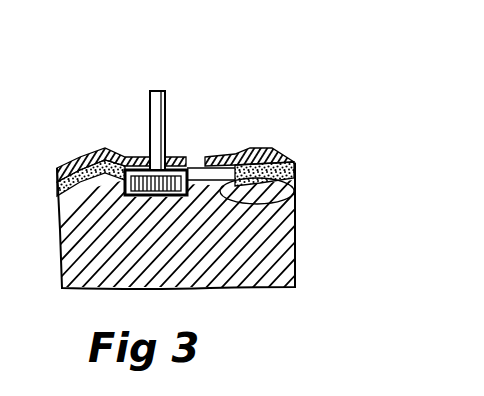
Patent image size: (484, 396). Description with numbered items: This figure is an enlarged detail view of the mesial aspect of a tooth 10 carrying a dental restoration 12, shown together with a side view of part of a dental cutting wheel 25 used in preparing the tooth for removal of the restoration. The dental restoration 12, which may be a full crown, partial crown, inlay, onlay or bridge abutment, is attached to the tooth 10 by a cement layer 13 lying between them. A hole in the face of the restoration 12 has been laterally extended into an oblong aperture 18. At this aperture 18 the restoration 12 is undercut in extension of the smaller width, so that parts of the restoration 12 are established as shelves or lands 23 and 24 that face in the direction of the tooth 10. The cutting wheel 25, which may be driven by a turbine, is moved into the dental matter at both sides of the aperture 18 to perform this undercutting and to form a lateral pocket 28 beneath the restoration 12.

The tooth 10 is at (297, 236).
The dental restoration 12 is at (196, 141).
The cement layer 13 is at (296, 171).
The aperture 18 is at (214, 170).
The land 23 is at (237, 156).
The land 24 is at (111, 150).
The dental cutting wheel 25 is at (183, 162).
The lateral pocket 28 is at (290, 202).